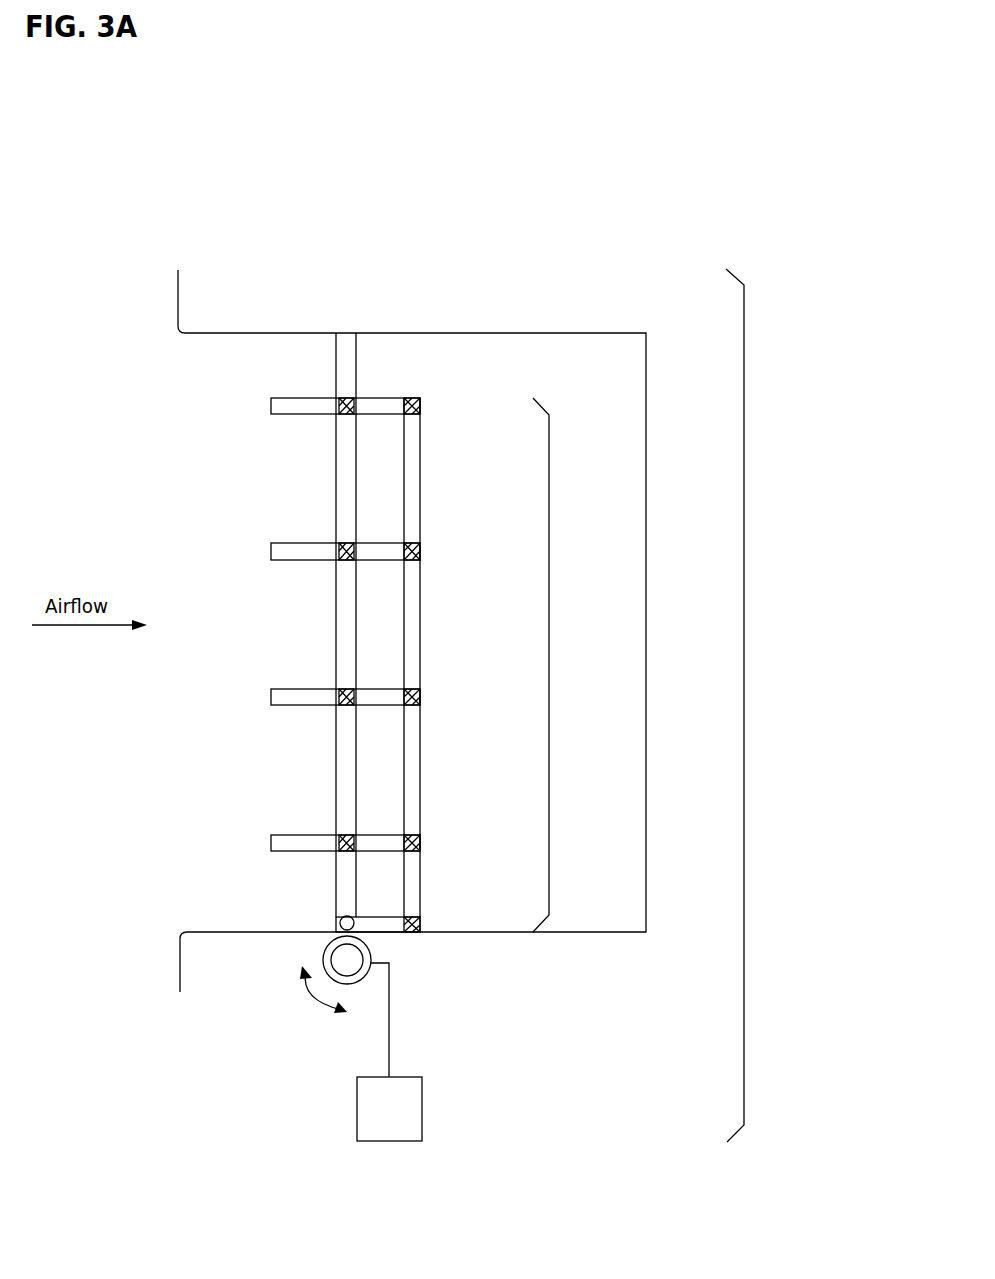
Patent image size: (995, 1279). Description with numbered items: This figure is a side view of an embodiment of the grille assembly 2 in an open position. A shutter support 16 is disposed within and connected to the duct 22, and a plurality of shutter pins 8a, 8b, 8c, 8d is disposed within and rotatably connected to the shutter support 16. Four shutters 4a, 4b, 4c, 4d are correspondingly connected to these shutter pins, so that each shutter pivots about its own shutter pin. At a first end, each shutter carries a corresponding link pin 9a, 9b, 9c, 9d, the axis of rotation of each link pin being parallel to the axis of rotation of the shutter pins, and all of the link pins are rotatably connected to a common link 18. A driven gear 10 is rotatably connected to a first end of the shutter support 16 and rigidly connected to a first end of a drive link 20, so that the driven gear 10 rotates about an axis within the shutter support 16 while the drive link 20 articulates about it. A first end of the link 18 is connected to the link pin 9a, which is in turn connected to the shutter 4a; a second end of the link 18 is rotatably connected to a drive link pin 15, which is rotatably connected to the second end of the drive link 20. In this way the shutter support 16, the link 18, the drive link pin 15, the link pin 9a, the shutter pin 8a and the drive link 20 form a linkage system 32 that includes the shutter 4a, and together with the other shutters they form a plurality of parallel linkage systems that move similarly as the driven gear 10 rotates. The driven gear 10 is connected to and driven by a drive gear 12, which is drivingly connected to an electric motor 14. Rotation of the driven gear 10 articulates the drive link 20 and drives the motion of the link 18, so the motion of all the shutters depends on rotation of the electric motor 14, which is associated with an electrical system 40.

The grille assembly 2 is at (744, 720).
The duct 22 is at (178, 300).
The shutter 4a is at (271, 401).
The shutter 4b is at (271, 547).
The shutter 4c is at (271, 692).
The shutter 4d is at (271, 839).
The shutter pin 8a is at (339, 410).
The shutter pin 8b is at (339, 556).
The shutter pin 8c is at (339, 701).
The shutter pin 8d is at (339, 847).
The link pin 9a is at (420, 404).
The link pin 9b is at (420, 551).
The link pin 9c is at (420, 697).
The link pin 9d is at (420, 843).
The shutter support 16 is at (336, 630).
The link 18 is at (420, 627).
The linkage system 32 is at (549, 664).
The driven gear 10 is at (330, 921).
The drive gear 12 is at (322, 960).
The electric motor 14 is at (349, 986).
The drive link pin 15 is at (423, 922).
The drive link 20 is at (391, 933).
The electrical system 40 is at (357, 1125).